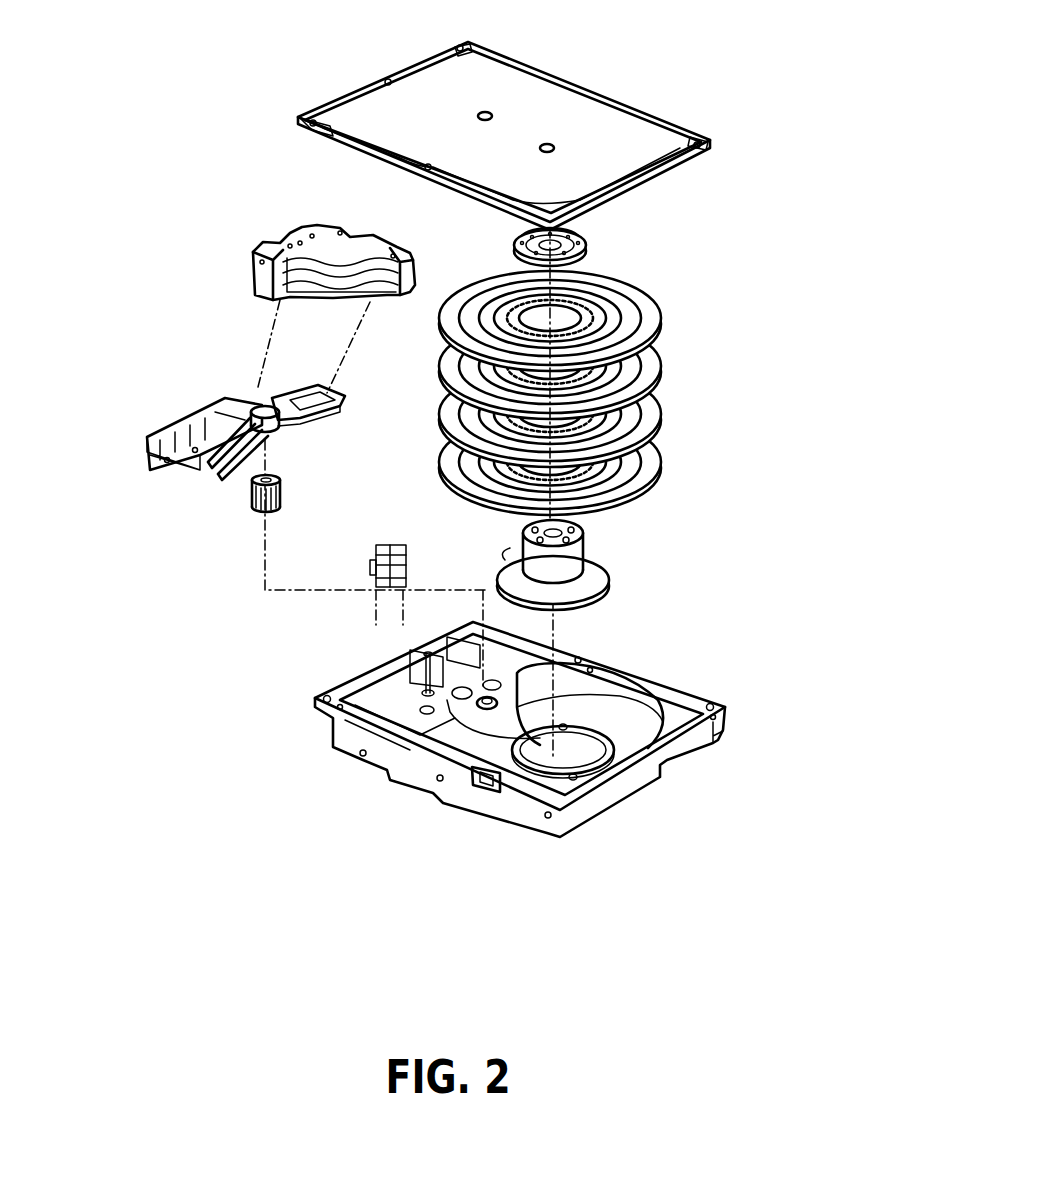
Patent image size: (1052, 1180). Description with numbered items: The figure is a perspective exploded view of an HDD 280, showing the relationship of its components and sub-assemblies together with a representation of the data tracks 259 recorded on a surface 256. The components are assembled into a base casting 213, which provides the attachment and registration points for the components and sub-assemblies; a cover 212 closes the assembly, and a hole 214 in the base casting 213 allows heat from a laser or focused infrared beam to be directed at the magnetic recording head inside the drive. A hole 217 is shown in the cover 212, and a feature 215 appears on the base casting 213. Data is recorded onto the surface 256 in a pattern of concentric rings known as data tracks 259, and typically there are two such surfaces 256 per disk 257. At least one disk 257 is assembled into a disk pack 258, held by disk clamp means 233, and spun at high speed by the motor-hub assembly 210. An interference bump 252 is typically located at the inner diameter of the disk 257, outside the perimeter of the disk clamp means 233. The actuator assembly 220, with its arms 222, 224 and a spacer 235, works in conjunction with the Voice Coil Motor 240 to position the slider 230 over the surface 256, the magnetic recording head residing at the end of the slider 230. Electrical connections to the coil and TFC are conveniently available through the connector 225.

The motor-hub assembly 210 is at (603, 568).
The cover 212 is at (600, 133).
The base casting 213 is at (330, 717).
The hole 214 is at (480, 790).
The pivot post 215 is at (482, 696).
The cover hole 217 is at (485, 108).
The actuator assembly 220 is at (202, 472).
The actuator arm 222 is at (242, 480).
The actuator arm 224 is at (227, 473).
The connector 225 is at (183, 455).
The slider 230 is at (213, 475).
The disk clamp means 233 is at (518, 238).
The spacer 235 is at (282, 495).
The Voice Coil Motor 240 is at (253, 232).
The interference bump 252 is at (596, 340).
The surface 256 is at (688, 446).
The disk 257 is at (532, 340).
The disk pack 258 is at (555, 340).
The data tracks 259 is at (497, 292).
The HDD 280 is at (717, 808).